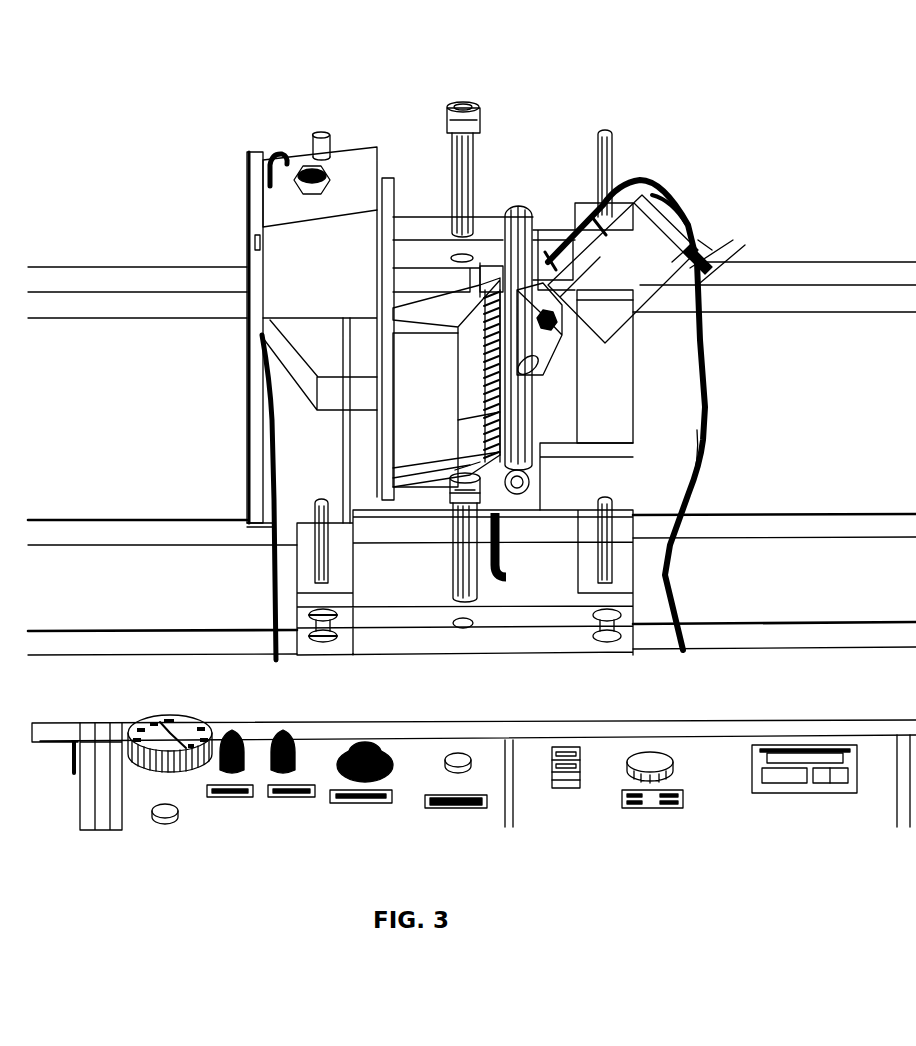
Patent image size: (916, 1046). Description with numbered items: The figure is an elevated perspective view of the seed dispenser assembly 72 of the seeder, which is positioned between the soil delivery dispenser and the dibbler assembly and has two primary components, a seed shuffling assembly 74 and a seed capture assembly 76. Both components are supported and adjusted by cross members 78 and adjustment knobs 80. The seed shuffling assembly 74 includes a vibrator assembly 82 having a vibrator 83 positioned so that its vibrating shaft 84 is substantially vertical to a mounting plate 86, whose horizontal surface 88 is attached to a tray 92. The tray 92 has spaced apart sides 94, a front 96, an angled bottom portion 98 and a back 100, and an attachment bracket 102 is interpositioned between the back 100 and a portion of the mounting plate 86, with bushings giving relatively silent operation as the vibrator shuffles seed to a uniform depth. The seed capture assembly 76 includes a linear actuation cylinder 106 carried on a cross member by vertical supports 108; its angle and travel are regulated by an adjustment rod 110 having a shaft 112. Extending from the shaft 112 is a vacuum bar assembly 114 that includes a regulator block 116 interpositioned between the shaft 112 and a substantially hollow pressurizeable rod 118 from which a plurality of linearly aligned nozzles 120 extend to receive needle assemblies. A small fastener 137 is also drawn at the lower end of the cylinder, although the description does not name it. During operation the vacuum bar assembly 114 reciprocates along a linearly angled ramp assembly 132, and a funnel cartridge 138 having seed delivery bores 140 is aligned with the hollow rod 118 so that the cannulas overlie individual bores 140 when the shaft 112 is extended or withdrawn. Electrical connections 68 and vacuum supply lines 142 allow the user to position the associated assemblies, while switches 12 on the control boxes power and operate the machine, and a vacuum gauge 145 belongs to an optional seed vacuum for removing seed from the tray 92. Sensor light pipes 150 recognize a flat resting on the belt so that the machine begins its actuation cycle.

The switches 12 is at (233, 797).
The electrical connections 68 is at (637, 223).
The seed dispenser assembly 72 is at (625, 145).
The seed shuffling assembly 74 is at (406, 309).
The seed capture assembly 76 is at (663, 187).
The cross members 78 is at (303, 563).
The adjustment knobs 80 is at (480, 118).
The vibrator assembly 82 is at (263, 225).
The vibrator 83 is at (273, 160).
The vibrating shaft 84 is at (263, 318).
The mounting plate 86 is at (247, 248).
The horizontal surface 88 is at (268, 488).
The tray 92 is at (453, 312).
The sides 94 is at (393, 478).
The front 96 is at (480, 405).
The angled bottom portion 98 is at (460, 378).
The back 100 is at (397, 357).
The attachment bracket 102 is at (387, 450).
The linear actuation cylinder 106 is at (703, 328).
The vertical supports 108 is at (610, 450).
The adjustment rod 110 is at (703, 283).
The shaft 112 is at (548, 325).
The vacuum bar assembly 114 is at (530, 437).
The regulator block 116 is at (533, 362).
The hollow pressurizeable rod 118 is at (492, 495).
The nozzles 120 is at (490, 430).
The linearly angled ramp assembly 132 is at (615, 405).
The nut 137 is at (567, 332).
The funnel cartridge 138 is at (457, 493).
The seed delivery bores 140 is at (480, 462).
The vacuum supply lines 142 is at (700, 263).
The vacuum gauge 145 is at (157, 775).
The sensor light pipes 150 is at (504, 577).